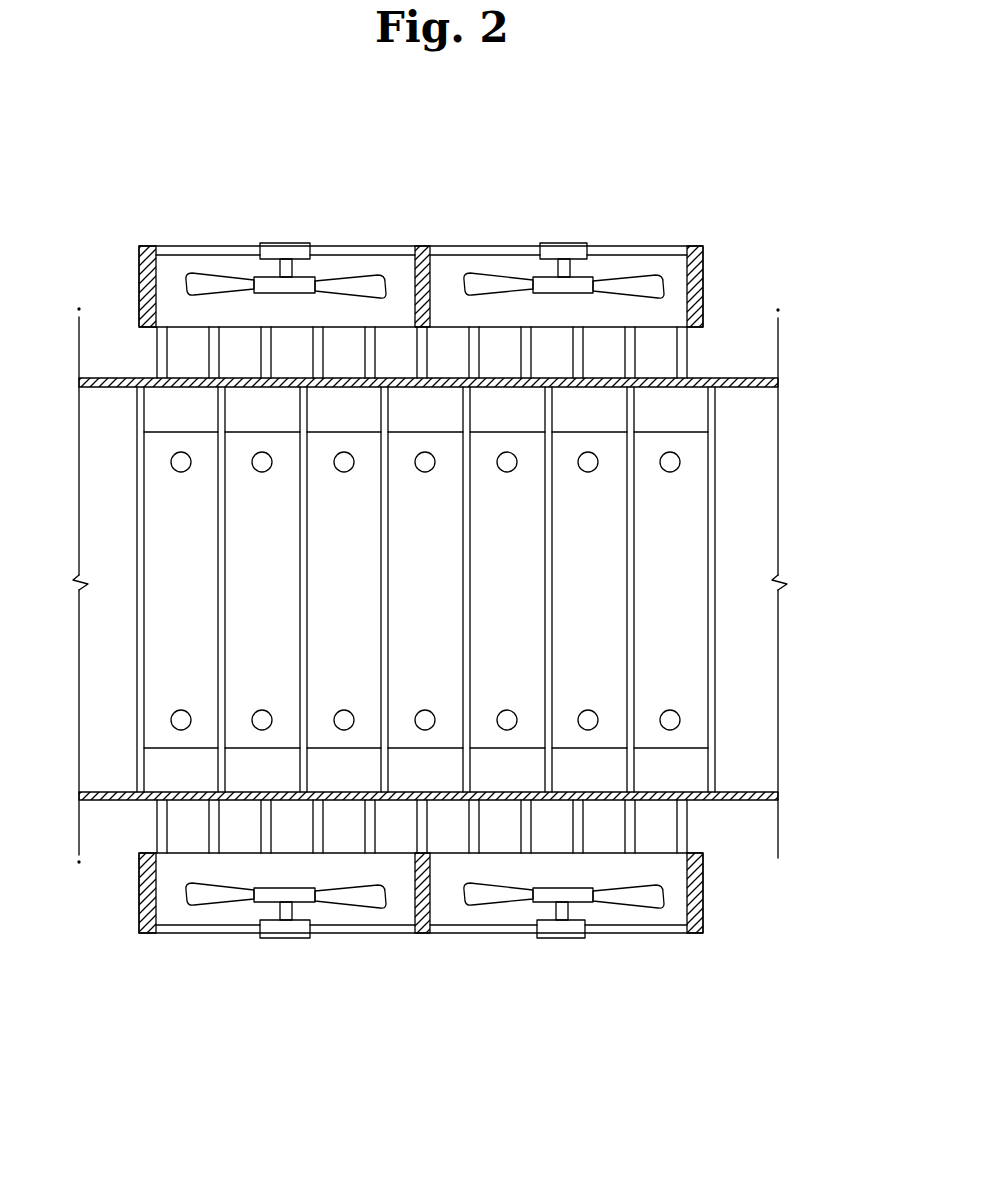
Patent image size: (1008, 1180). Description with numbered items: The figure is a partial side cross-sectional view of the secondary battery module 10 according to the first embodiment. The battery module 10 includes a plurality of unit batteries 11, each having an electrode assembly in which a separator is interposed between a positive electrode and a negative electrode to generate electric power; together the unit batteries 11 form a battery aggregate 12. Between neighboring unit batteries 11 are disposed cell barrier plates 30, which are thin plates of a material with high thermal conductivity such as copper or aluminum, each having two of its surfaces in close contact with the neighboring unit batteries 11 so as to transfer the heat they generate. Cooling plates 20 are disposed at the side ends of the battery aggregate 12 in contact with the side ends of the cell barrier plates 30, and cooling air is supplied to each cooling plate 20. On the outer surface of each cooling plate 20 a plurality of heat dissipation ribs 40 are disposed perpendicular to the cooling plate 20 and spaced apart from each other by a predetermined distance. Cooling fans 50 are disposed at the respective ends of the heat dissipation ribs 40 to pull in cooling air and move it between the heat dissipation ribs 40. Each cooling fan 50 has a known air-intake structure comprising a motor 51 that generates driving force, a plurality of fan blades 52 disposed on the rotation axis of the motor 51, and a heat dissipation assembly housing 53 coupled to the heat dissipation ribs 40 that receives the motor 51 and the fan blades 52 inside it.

The battery module 10 is at (808, 200).
The unit battery 11 is at (602, 516).
The battery aggregate 12 is at (830, 500).
The cooling plate 20 is at (119, 378).
The cell barrier plate 30 is at (137, 506).
The heat dissipation rib 40 is at (688, 345).
The cooling fan 50 is at (697, 232).
The motor 51 is at (568, 243).
The fan blade 52 is at (483, 265).
The heat dissipation assembly housing 53 is at (640, 248).